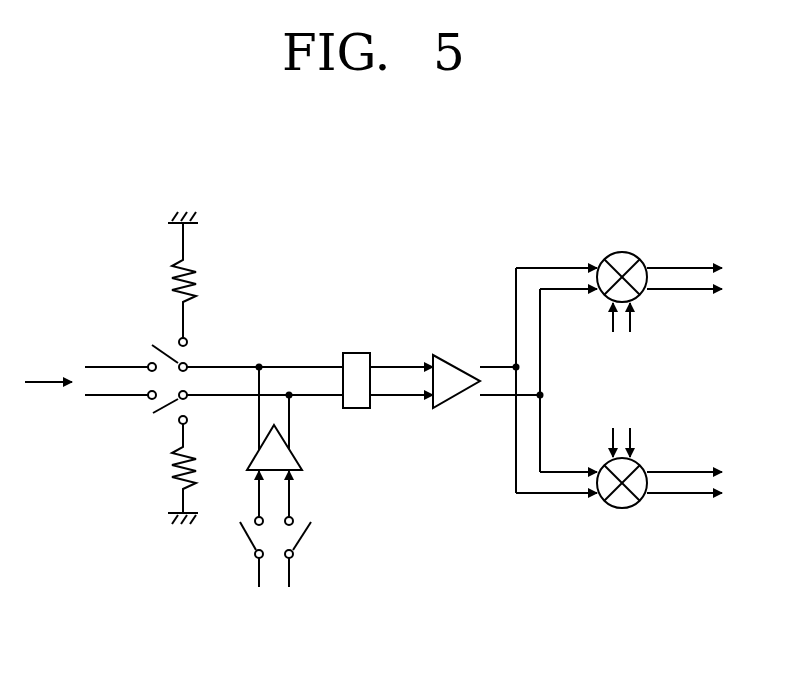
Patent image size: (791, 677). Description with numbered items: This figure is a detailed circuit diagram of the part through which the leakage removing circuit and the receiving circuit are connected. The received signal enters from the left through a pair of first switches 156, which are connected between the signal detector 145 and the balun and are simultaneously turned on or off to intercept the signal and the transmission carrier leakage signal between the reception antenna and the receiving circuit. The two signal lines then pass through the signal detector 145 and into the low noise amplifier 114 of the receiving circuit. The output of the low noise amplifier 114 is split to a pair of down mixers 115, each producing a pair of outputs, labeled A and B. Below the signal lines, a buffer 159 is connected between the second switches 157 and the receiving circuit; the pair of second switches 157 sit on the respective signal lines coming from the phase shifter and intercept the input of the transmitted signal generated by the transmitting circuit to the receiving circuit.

The first switches 156 is at (155, 415).
The signal detector 145 is at (355, 353).
The low noise amplifier (LNA) 114 is at (435, 355).
The down mixer 115 is at (622, 252).
The buffer 159 is at (298, 458).
The second switches 157 is at (297, 545).